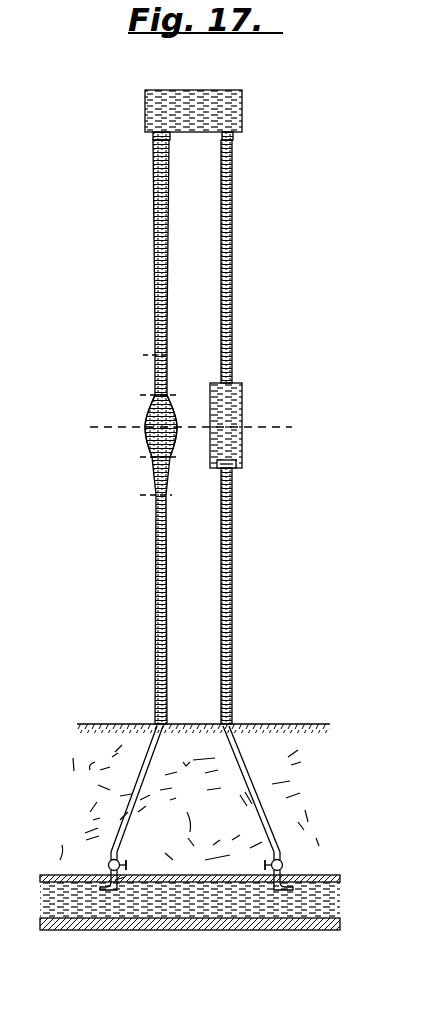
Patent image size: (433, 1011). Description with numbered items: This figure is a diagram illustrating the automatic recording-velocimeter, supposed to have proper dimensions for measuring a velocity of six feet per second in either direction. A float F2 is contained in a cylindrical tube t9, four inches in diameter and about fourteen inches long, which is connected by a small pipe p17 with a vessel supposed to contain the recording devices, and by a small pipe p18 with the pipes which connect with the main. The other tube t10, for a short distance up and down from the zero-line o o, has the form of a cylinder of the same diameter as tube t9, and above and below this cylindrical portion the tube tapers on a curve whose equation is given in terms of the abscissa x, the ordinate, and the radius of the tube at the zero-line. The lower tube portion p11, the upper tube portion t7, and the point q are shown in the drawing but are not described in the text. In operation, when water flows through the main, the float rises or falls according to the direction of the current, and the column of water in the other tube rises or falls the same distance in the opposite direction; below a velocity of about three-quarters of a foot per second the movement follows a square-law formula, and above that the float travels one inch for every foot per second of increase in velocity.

The small pipe p18 is at (207, 90).
The small pipe p17 is at (238, 261).
The lower tube of right rod p11 is at (232, 614).
The left rod (thermal element) t7 is at (151, 341).
The cylindrical tube t9 is at (236, 425).
The tube t10 is at (150, 425).
The float F2 is at (277, 470).
The zero-line o is at (190, 428).
The point q is at (172, 361).
The abscissa x is at (171, 394).